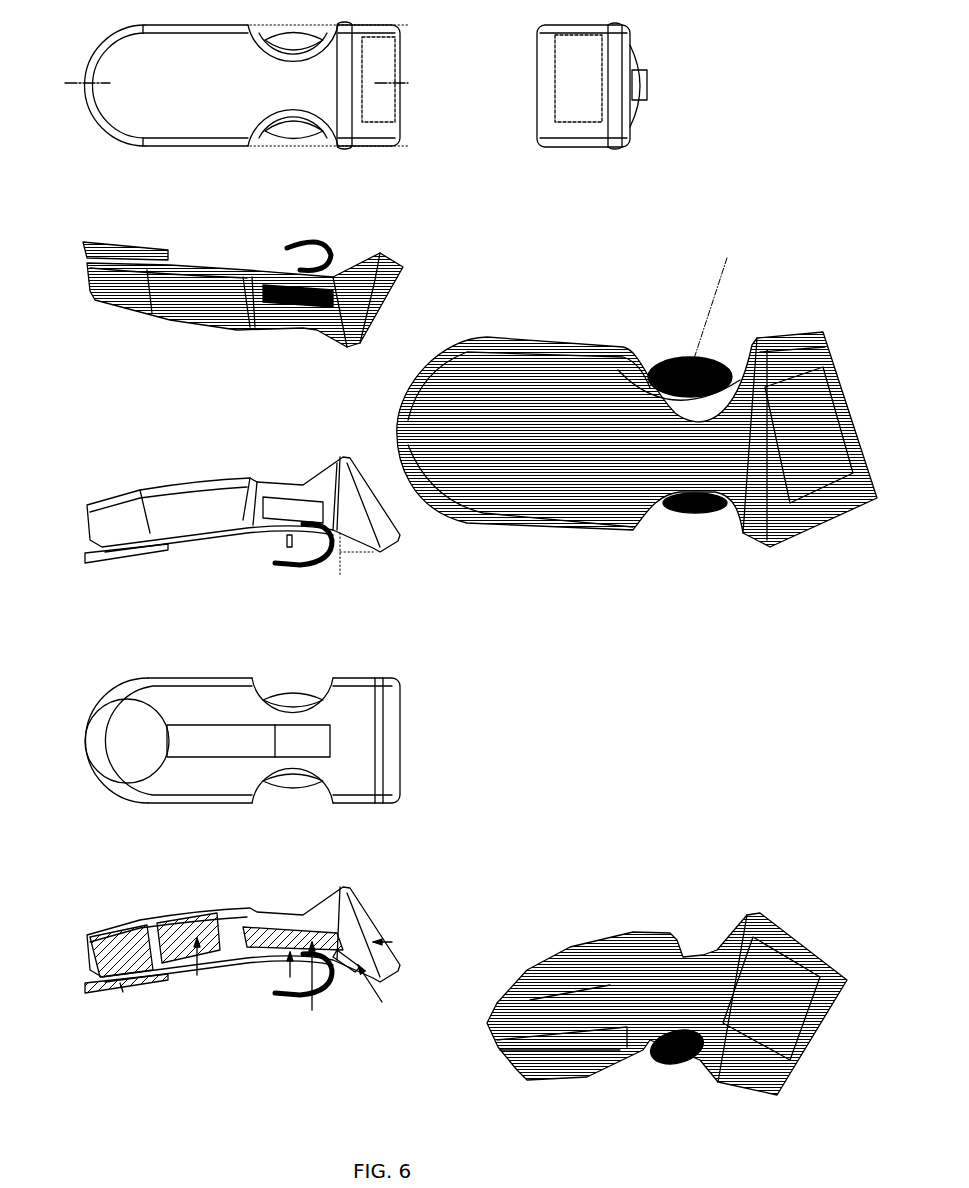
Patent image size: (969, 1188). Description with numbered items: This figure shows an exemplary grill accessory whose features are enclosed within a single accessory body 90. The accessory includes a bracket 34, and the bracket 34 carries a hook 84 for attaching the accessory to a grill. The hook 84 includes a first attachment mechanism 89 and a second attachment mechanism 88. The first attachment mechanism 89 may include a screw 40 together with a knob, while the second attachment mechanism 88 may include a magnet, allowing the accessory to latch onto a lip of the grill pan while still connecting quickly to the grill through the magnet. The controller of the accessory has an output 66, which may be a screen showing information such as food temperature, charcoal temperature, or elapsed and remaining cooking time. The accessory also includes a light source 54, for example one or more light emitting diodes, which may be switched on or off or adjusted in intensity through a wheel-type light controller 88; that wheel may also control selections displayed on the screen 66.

The bracket 34 is at (223, 270).
The screw 40 is at (287, 258).
The light source 54 is at (360, 965).
The output 66 is at (793, 420).
The hook 84 is at (290, 568).
The second attachment mechanism 88 is at (144, 553).
The first attachment mechanism 89 is at (673, 355).
The accessory body 90 is at (560, 517).